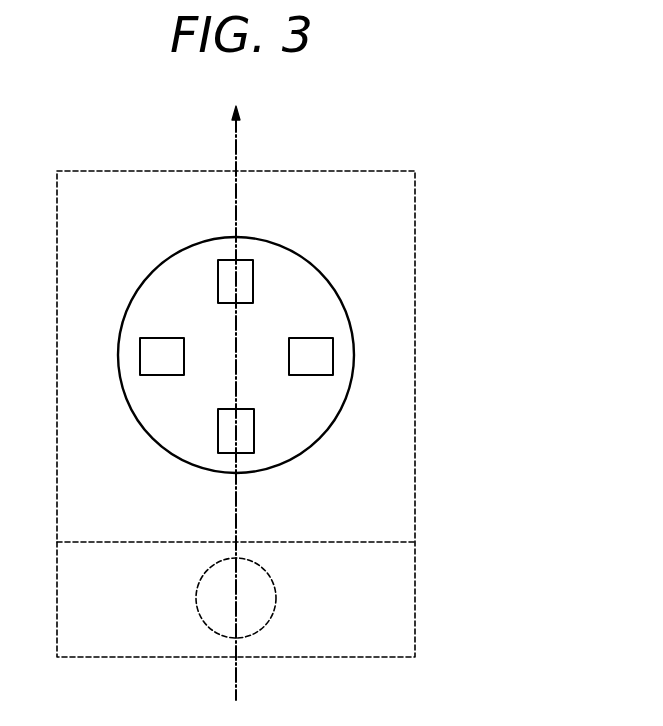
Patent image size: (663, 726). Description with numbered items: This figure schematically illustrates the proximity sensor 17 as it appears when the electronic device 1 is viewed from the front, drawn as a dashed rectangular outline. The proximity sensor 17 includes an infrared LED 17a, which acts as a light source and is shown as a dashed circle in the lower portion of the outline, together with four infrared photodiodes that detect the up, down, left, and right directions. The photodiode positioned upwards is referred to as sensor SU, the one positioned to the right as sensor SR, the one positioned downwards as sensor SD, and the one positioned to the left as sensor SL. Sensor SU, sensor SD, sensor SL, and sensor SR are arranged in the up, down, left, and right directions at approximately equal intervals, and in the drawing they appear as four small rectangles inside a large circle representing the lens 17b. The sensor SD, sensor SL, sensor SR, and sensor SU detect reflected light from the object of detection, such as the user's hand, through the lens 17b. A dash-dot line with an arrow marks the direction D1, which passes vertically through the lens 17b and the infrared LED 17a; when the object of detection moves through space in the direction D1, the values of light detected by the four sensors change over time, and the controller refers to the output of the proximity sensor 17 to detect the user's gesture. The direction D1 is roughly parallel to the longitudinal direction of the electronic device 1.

The proximity sensor 17 is at (415, 223).
The infrared LED 17a is at (277, 598).
The lens 17b is at (335, 287).
The electronic device 1 is at (380, 500).
The direction D1 is at (222, 403).
The sensor SU is at (226, 263).
The sensor SD is at (226, 438).
The sensor SL is at (160, 354).
The sensor SR is at (317, 358).